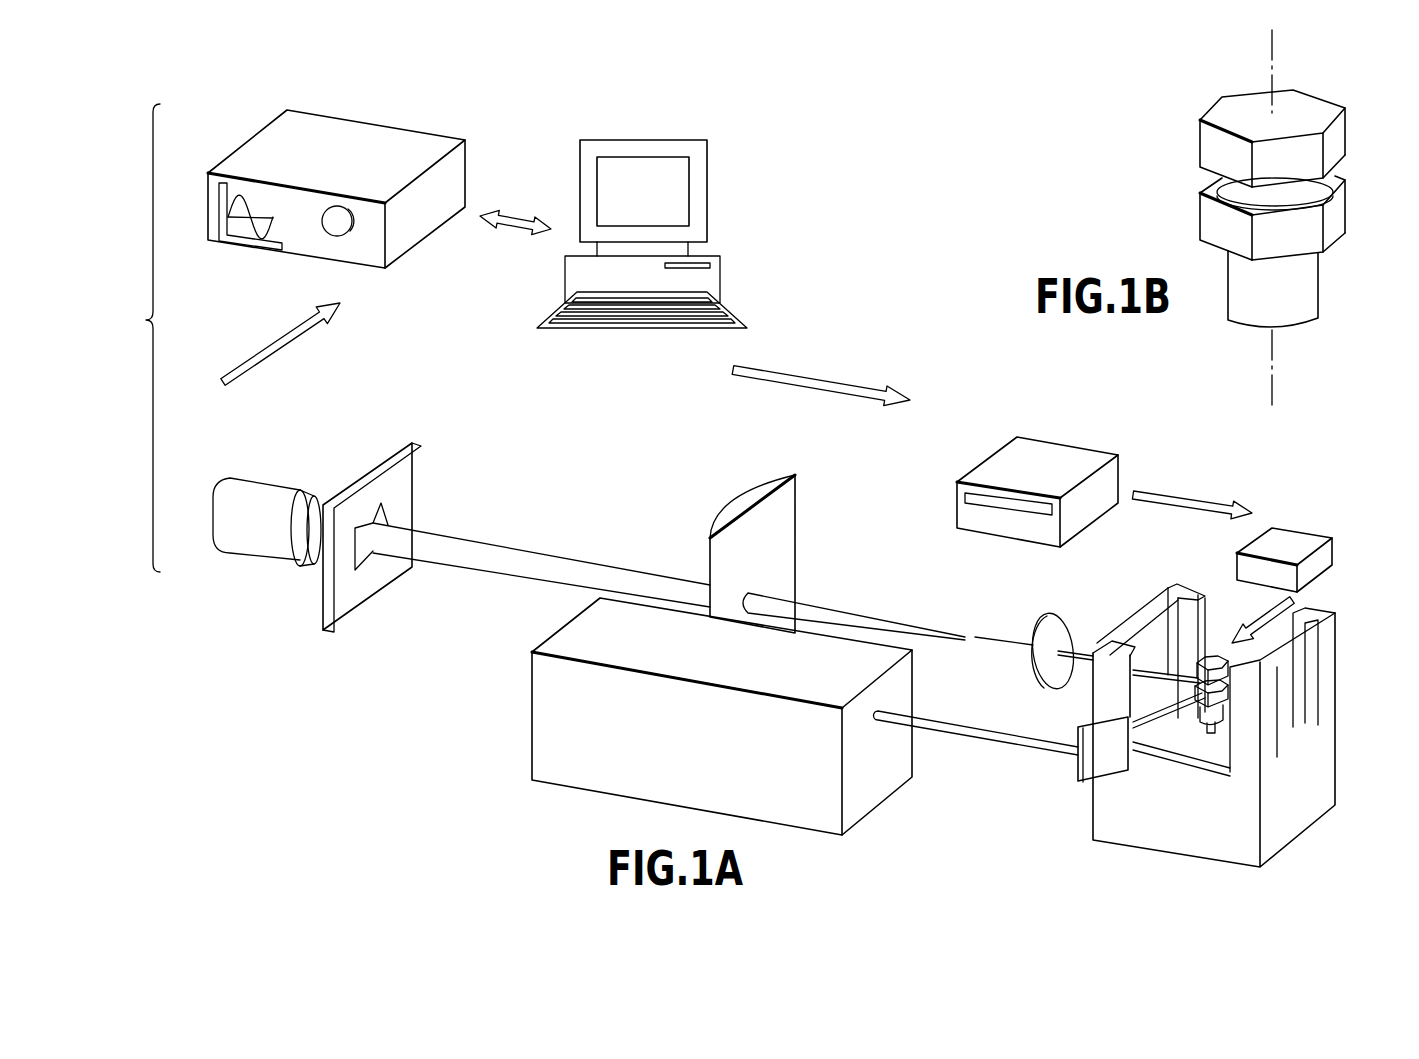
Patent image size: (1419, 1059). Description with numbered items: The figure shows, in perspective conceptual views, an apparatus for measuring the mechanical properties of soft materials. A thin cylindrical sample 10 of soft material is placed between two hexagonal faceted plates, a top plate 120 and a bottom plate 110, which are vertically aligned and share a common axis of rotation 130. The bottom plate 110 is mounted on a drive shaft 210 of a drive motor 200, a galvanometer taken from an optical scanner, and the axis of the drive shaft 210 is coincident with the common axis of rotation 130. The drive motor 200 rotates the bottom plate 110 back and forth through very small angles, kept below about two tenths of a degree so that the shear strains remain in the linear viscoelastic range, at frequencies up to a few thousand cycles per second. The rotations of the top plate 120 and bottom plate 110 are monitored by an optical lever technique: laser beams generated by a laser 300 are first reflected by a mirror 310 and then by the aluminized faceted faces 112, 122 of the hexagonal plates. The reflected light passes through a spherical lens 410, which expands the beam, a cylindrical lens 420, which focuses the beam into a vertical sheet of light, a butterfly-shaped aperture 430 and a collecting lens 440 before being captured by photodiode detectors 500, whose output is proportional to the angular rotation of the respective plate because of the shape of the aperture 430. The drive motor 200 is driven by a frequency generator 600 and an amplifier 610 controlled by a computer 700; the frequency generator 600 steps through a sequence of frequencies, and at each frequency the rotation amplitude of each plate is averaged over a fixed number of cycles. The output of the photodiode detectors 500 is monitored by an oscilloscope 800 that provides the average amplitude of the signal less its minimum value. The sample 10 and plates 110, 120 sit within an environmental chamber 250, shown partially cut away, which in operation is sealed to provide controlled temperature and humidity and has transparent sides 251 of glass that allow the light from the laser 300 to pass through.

In FIG. 1A, the oscilloscope 800 is at (332, 140).
In FIG. 1A, the computer 700 is at (680, 182).
In FIG. 1A, the photodiode detectors 500 is at (267, 490).
In FIG. 1A, the collecting lens 440 is at (325, 490).
In FIG. 1A, the butterfly-shaped aperture 430 is at (408, 473).
In FIG. 1A, the cylindrical lens 420 is at (788, 513).
In FIG. 1A, the laser 300 is at (533, 718).
In FIG. 1A, the mirror 310 is at (1092, 755).
In FIG. 1A, the frequency generator 600 is at (1065, 452).
In FIG. 1A, the amplifier 610 is at (1297, 535).
In FIG. 1A, the spherical lens 410 is at (1062, 624).
In FIG. 1A, the transparent sides 251 is at (1132, 618).
In FIG. 1A, the environmental chamber 250 is at (1222, 842).
In FIG. 1A, the drive motor 200 is at (1193, 735).
In FIG. 1A, the top plate 120 is at (1215, 676).
In FIG. 1B, the top plate 120 is at (1297, 113).
In FIG. 1A, the bottom plate 110 is at (1213, 690).
In FIG. 1B, the bottom plate 110 is at (1308, 228).
In FIG. 1A, the drive shaft 210 is at (1207, 713).
In FIG. 1B, the drive shaft 210 is at (1297, 288).
In FIG. 1B, the faceted face of top plate 122 is at (1207, 142).
In FIG. 1B, the faceted face of bottom plate 112 is at (1207, 223).
In FIG. 1B, the sample 10 is at (1305, 190).
In FIG. 1B, the common axis of rotation 130 is at (1272, 383).